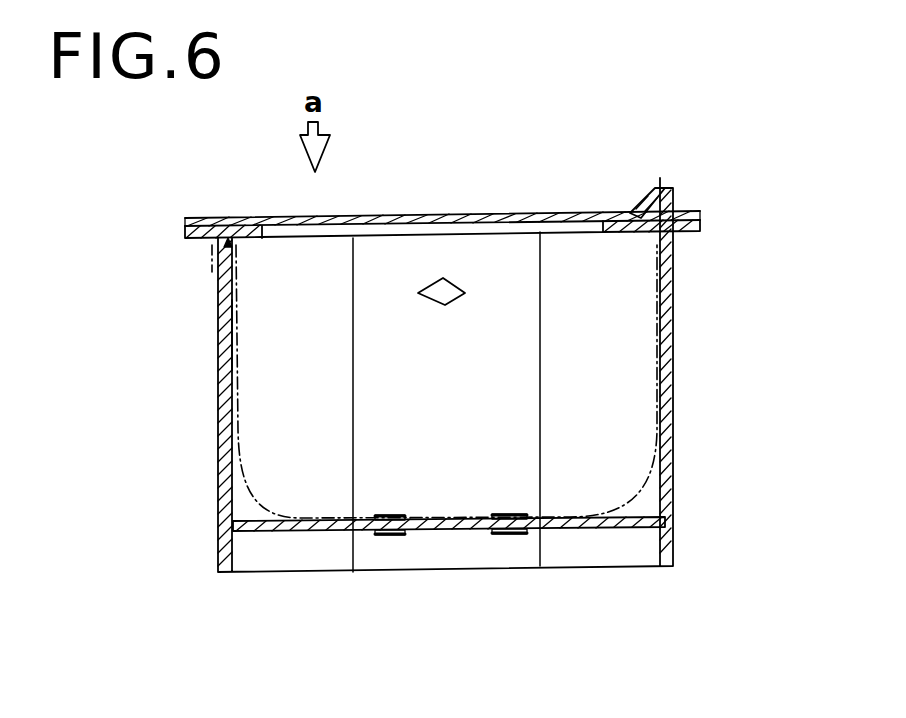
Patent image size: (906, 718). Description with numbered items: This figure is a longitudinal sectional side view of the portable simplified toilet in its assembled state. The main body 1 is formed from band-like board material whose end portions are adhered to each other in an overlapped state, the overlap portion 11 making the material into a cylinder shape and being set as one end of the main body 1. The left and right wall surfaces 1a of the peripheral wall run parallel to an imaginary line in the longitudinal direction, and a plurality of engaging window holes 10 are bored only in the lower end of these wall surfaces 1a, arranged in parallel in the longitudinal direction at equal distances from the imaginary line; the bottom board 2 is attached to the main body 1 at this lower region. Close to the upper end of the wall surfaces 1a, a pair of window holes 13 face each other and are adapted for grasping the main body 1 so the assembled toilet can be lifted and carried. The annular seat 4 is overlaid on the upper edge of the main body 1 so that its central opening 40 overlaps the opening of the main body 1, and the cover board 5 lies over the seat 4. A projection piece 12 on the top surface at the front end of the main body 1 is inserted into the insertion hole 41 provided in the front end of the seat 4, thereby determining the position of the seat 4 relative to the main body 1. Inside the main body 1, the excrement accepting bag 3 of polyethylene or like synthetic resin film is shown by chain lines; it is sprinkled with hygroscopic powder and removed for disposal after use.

The main body 1 is at (217, 473).
The wall surfaces 1a is at (510, 402).
The bottom board 2 is at (295, 536).
The excrement accepting bag 3 is at (655, 343).
The seat 4 is at (195, 241).
The cover board 5 is at (373, 213).
The engaging window hole 10 is at (392, 515).
The overlap portion 11 is at (230, 334).
The projection piece 12 is at (667, 186).
The window hole 13 is at (438, 297).
The central opening 40 is at (476, 227).
The insertion hole 41 is at (590, 399).